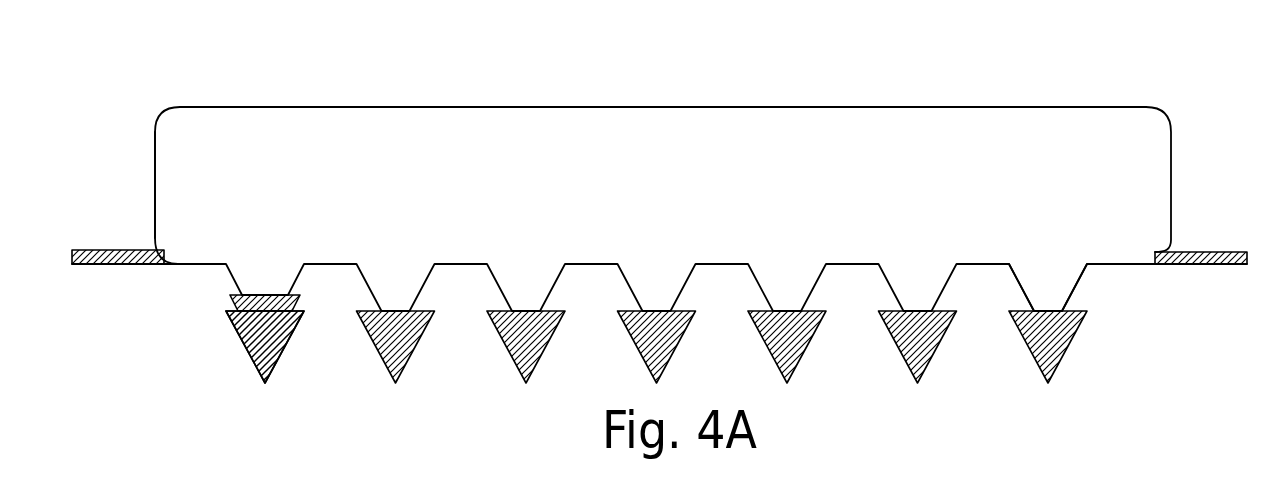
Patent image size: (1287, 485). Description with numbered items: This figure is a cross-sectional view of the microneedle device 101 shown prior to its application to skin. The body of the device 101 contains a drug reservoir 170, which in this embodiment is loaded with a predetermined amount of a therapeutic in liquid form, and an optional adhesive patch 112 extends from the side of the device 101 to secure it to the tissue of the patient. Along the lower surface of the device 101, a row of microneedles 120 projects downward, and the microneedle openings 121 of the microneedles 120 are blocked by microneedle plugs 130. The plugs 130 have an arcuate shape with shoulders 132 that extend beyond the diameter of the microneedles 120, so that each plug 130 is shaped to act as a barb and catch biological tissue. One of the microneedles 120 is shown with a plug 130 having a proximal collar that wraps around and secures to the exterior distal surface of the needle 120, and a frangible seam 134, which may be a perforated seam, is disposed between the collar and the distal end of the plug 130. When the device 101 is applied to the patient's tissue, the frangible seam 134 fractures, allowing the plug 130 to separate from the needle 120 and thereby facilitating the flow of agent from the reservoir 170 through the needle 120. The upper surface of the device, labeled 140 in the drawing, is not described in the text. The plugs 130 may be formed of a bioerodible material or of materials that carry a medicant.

The microneedle device 101 is at (1171, 143).
The adhesive patch 112 is at (1215, 252).
The microneedles 120 is at (763, 298).
The microneedle openings 121 is at (1052, 307).
The microneedle plugs 130 is at (285, 347).
The shoulders 132 is at (233, 302).
The frangible seam 134 is at (240, 339).
The top surface of package 140 is at (733, 107).
The drug reservoir 170 is at (243, 135).